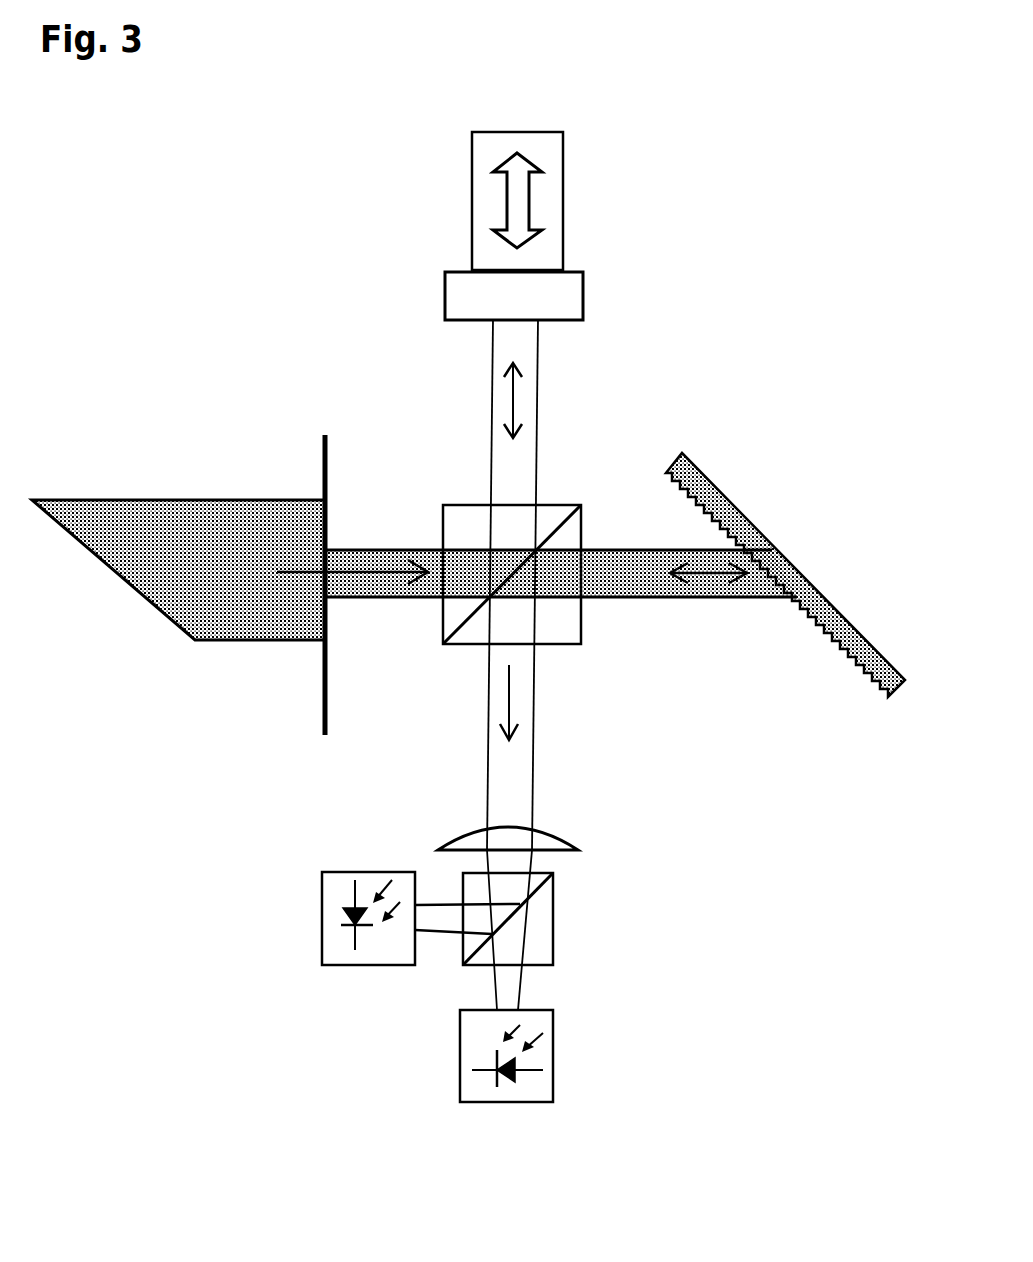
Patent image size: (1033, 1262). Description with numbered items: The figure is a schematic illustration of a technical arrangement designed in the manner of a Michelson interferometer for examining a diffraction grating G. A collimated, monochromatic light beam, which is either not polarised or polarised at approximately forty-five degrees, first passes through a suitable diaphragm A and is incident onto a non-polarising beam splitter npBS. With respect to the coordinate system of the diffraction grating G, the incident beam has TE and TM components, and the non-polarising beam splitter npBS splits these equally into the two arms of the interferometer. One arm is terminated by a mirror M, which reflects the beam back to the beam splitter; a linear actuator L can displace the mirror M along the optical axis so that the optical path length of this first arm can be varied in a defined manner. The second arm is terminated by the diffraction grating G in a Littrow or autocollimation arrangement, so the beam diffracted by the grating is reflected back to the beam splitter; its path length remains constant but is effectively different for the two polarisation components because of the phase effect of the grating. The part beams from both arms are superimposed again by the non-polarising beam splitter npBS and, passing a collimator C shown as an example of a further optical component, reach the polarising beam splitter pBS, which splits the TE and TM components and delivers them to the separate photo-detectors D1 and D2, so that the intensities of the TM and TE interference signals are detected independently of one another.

The linear actuator L is at (535, 201).
The mirror M is at (533, 305).
The diaphragm A is at (178, 585).
The diffraction grating G is at (785, 575).
The non-polarising beam splitter npBS is at (546, 596).
The collimator C is at (524, 827).
The polarising beam splitter pBS is at (527, 919).
The photo-detector D1 is at (470, 1080).
The photo-detector D2 is at (320, 941).